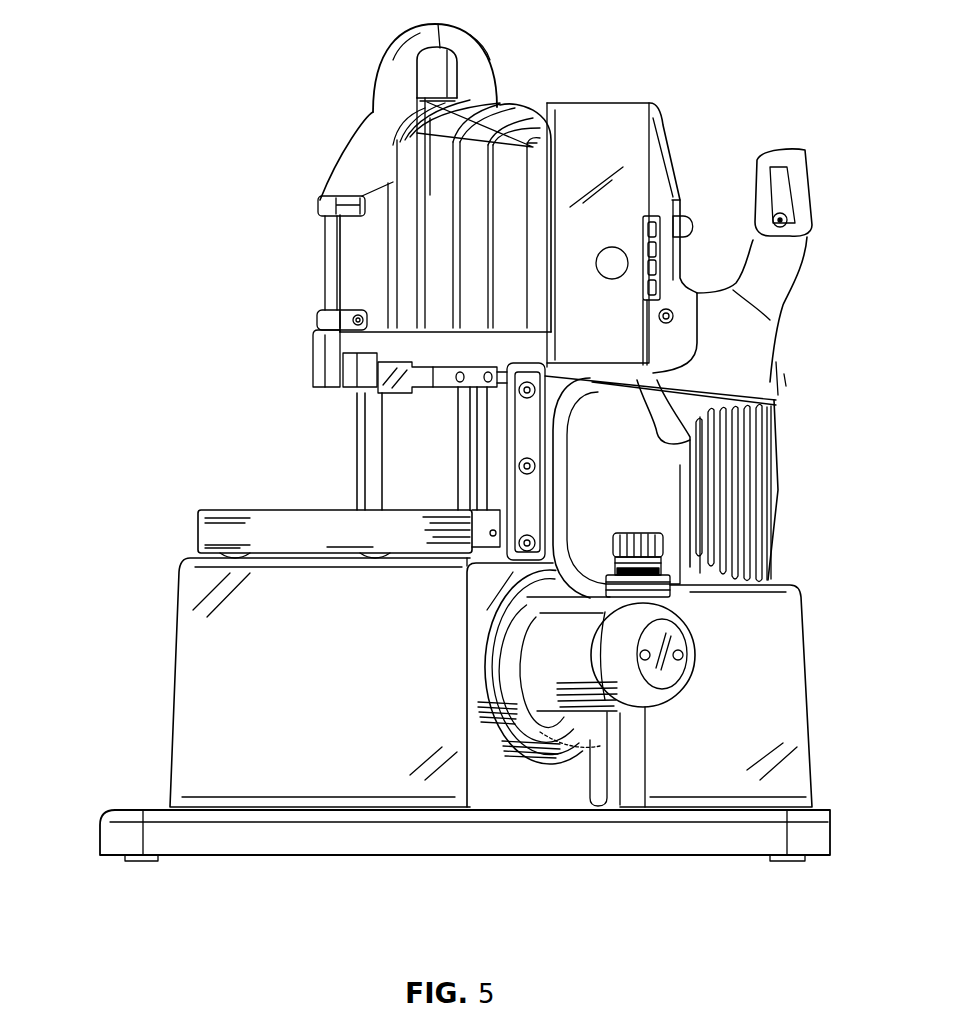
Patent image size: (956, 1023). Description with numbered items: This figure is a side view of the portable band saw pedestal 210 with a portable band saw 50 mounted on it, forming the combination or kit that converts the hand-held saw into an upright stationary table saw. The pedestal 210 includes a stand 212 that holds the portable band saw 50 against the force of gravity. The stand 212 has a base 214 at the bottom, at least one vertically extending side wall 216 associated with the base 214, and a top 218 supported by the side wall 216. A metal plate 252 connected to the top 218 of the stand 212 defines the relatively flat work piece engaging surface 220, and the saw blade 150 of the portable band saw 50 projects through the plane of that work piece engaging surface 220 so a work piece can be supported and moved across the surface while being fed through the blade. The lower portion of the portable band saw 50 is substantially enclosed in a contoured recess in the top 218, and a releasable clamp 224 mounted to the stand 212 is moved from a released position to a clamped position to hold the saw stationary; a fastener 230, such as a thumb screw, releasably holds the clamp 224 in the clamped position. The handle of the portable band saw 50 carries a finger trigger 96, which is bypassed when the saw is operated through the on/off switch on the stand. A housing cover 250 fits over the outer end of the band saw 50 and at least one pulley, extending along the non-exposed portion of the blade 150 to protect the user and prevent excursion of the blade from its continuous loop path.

The portable band saw pedestal 210 is at (212, 288).
The housing cover 250 is at (346, 142).
The saw blade 150 is at (357, 413).
The work piece engaging surface 220 is at (223, 510).
The metal plate 252 is at (226, 534).
The top 218 is at (300, 556).
The base 214 is at (130, 805).
The stand 212 is at (106, 800).
The side wall 216 is at (763, 690).
The portable band saw 50 is at (782, 438).
The finger trigger 96 is at (648, 422).
The fastener 230 is at (650, 534).
The releasable clamp 224 is at (610, 568).